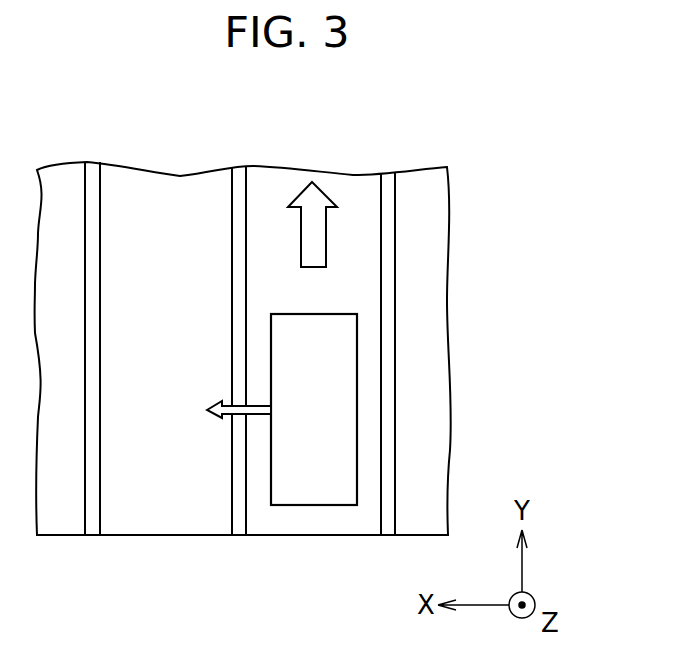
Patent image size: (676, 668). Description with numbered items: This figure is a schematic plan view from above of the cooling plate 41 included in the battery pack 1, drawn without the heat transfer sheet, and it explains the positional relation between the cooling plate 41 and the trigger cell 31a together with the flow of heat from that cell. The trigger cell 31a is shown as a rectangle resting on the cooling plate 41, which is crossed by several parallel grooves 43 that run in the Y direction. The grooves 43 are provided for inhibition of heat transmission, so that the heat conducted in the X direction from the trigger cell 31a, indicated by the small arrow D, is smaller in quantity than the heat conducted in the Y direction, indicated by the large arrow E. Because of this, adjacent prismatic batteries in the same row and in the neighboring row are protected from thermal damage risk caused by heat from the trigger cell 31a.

The battery pack 1 is at (285, 327).
The cooling plate 41 is at (180, 173).
The groove 43 is at (100, 503).
The trigger cell 31a is at (331, 365).
The arrow E is at (317, 233).
The arrow D is at (217, 413).